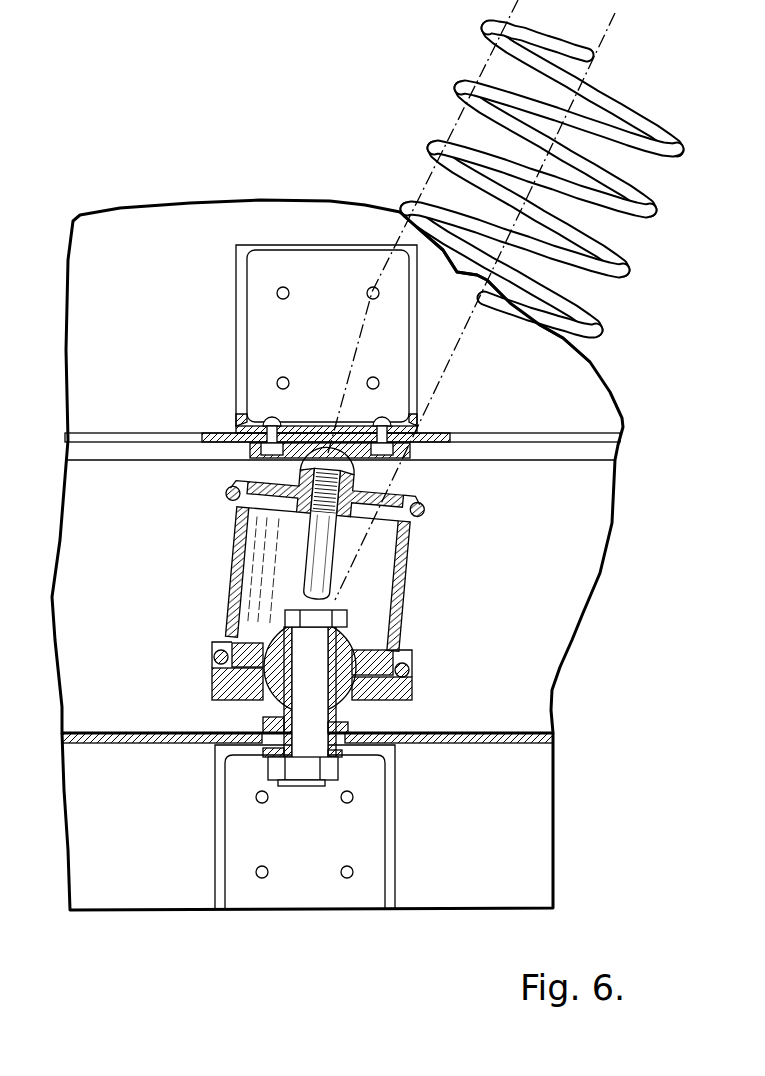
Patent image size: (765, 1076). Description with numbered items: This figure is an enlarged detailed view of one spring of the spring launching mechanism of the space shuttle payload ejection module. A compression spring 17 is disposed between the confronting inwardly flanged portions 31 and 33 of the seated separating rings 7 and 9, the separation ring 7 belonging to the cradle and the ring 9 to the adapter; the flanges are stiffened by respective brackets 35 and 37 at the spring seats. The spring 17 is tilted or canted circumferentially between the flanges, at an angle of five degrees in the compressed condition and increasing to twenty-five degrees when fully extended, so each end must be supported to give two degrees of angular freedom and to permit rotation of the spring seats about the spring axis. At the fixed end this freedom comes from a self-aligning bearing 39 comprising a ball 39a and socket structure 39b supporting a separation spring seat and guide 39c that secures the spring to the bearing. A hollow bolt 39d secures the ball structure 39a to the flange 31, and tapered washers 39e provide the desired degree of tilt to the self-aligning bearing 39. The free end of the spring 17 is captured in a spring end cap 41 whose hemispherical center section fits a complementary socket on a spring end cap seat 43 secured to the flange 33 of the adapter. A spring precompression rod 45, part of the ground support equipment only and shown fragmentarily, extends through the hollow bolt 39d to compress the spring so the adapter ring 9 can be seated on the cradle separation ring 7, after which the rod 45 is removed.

The separation ring 7 is at (537, 813).
The ring 9 is at (598, 402).
The compression spring 17 is at (656, 213).
The inwardly flanged portion 31 is at (122, 733).
The inwardly flanged portion 33 is at (112, 446).
The bracket 35 is at (384, 874).
The bracket 37 is at (236, 272).
The self-aligning bearing 39 is at (362, 617).
The ball 39a is at (343, 703).
The socket structure 39b is at (256, 701).
The separation spring seat and guide 39c is at (371, 667).
The hollow bolt 39d is at (282, 633).
The tapered washers 39e is at (348, 732).
The spring end cap 41 is at (421, 499).
The spring end cap seat 43 is at (404, 456).
The spring precompression rod 45 is at (316, 535).